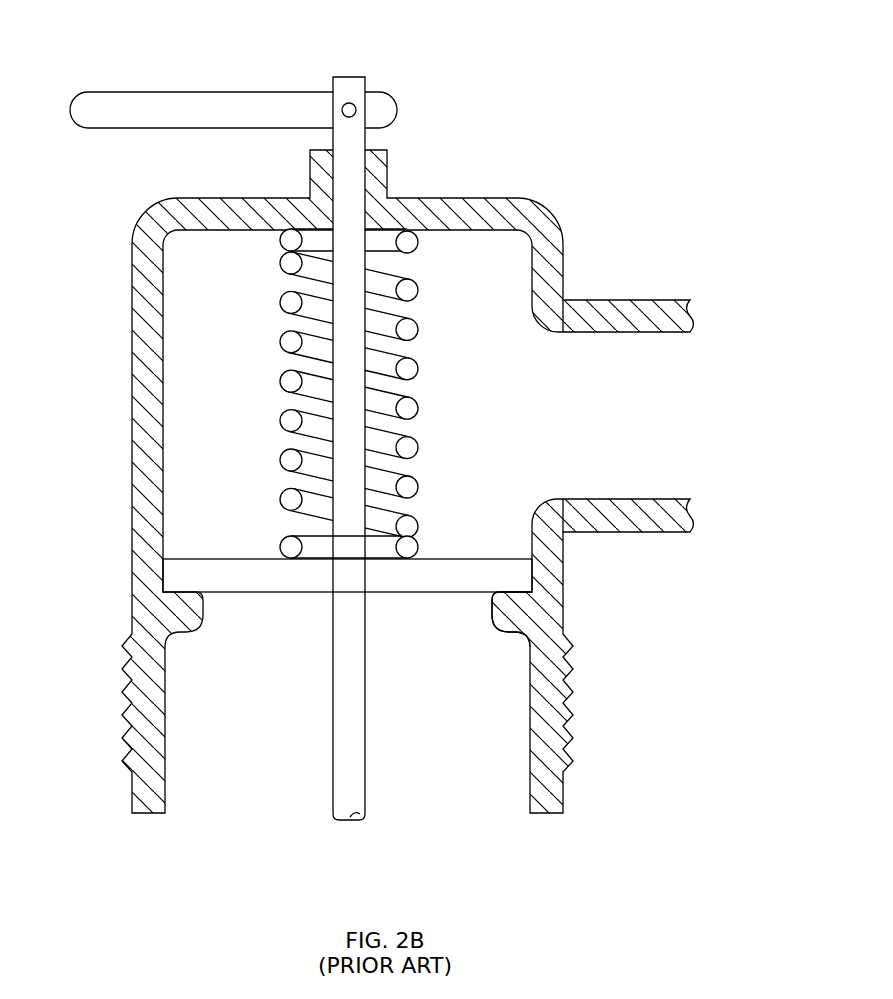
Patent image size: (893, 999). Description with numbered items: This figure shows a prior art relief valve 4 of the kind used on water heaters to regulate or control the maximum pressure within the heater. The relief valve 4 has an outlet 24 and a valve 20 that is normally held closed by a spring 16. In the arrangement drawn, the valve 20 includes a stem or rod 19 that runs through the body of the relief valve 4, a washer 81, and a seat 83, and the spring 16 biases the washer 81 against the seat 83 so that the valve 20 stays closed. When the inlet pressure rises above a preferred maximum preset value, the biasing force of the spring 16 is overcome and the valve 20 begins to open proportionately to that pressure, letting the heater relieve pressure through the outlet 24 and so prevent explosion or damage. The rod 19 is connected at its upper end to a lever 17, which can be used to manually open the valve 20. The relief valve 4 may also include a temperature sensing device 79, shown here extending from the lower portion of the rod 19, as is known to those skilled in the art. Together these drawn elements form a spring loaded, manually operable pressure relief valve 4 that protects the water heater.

The relief valve 4 is at (132, 421).
The spring 16 is at (291, 302).
The lever 17 is at (142, 91).
The stem or rod 19 is at (352, 303).
The valve 20 is at (440, 446).
The outlet 24 is at (672, 403).
The temperature sensing device 79 is at (365, 732).
The washer 81 is at (412, 543).
The seat 83 is at (536, 604).